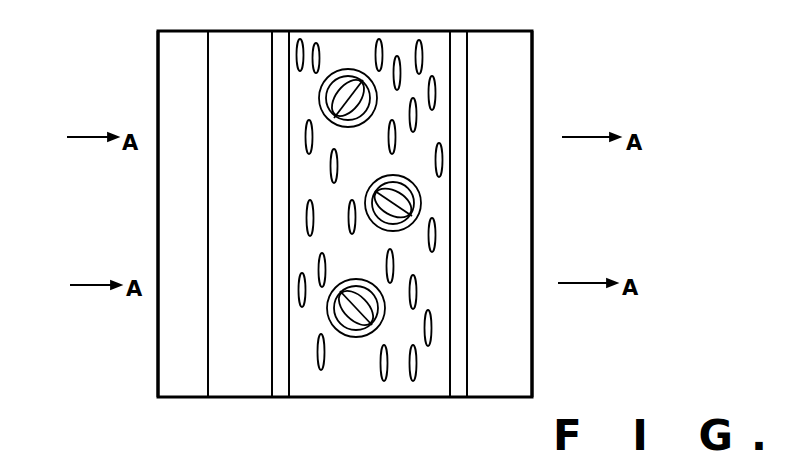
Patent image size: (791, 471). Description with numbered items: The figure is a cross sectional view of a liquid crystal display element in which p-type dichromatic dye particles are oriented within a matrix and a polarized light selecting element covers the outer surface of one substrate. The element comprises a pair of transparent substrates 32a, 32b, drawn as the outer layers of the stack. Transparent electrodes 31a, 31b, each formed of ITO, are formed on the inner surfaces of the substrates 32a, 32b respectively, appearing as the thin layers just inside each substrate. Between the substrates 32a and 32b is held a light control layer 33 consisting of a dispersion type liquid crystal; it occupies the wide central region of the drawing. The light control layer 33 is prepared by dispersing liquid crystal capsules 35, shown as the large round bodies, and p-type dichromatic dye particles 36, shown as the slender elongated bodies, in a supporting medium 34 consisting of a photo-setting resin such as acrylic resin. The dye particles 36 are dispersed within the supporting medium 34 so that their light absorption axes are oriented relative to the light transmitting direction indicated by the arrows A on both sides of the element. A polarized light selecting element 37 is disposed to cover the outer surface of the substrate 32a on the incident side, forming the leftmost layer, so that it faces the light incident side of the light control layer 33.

The transparent electrode 31a is at (279, 399).
The transparent electrode 31b is at (456, 399).
The transparent substrate 32a is at (236, 400).
The transparent substrate 32b is at (514, 392).
The light control layer 33 is at (371, 243).
The supporting medium 34 is at (300, 103).
The liquid crystal capsules 35 is at (356, 128).
The p-type dichromatic dye particles 36 is at (423, 58).
The polarized light selecting element 37 is at (183, 392).